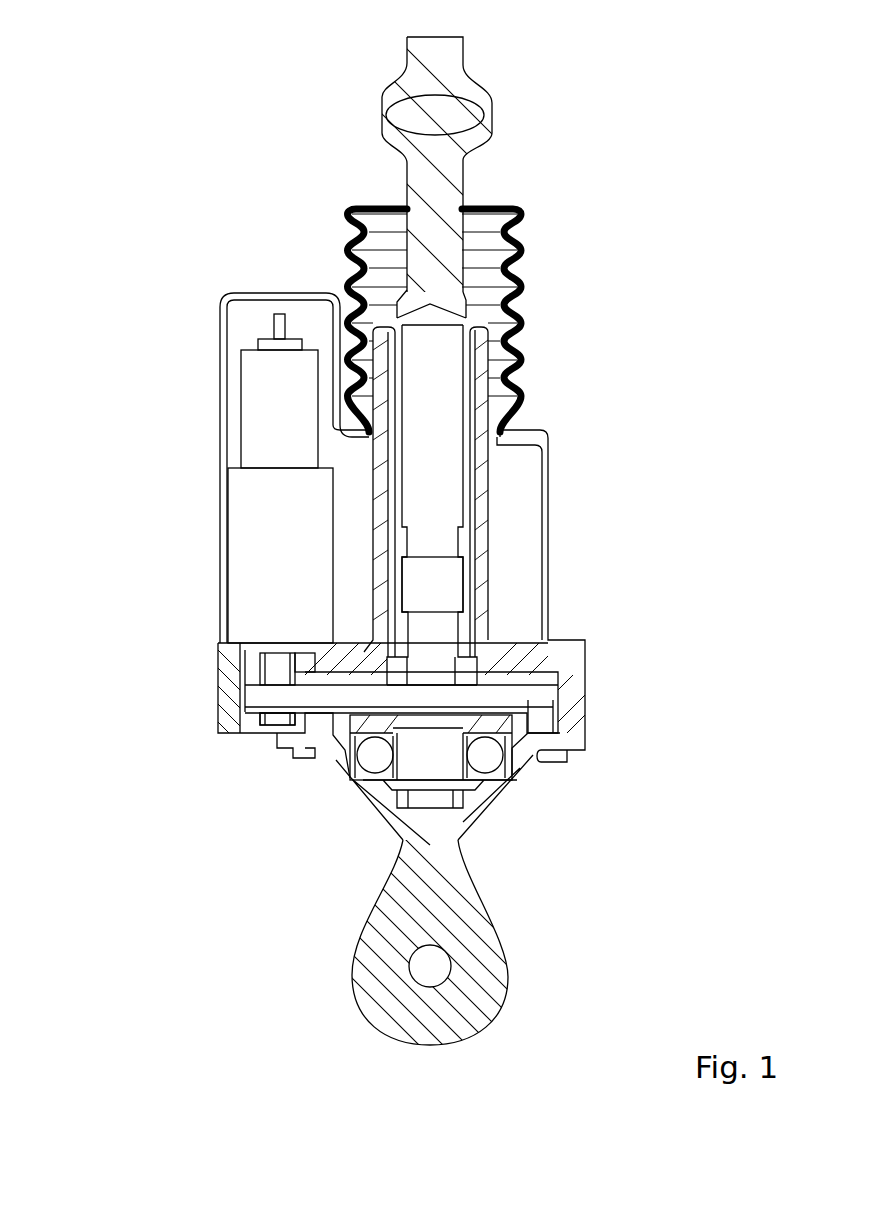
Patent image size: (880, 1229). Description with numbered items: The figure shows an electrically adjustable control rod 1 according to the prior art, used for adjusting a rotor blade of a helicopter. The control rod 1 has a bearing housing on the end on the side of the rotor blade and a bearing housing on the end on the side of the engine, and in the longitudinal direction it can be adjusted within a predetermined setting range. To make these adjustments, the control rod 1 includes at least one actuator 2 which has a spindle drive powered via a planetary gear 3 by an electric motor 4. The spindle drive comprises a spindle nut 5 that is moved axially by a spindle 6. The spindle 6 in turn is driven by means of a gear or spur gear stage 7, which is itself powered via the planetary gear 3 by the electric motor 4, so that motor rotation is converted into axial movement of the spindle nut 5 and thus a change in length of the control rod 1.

The electrically adjustable control rod 1 is at (465, 184).
The actuator 2 is at (355, 575).
The planetary gear 3 is at (253, 525).
The electric motor 4 is at (273, 415).
The spindle nut 5 is at (430, 515).
The spindle 6 is at (437, 637).
The gear or spur gear stage 7 is at (253, 732).